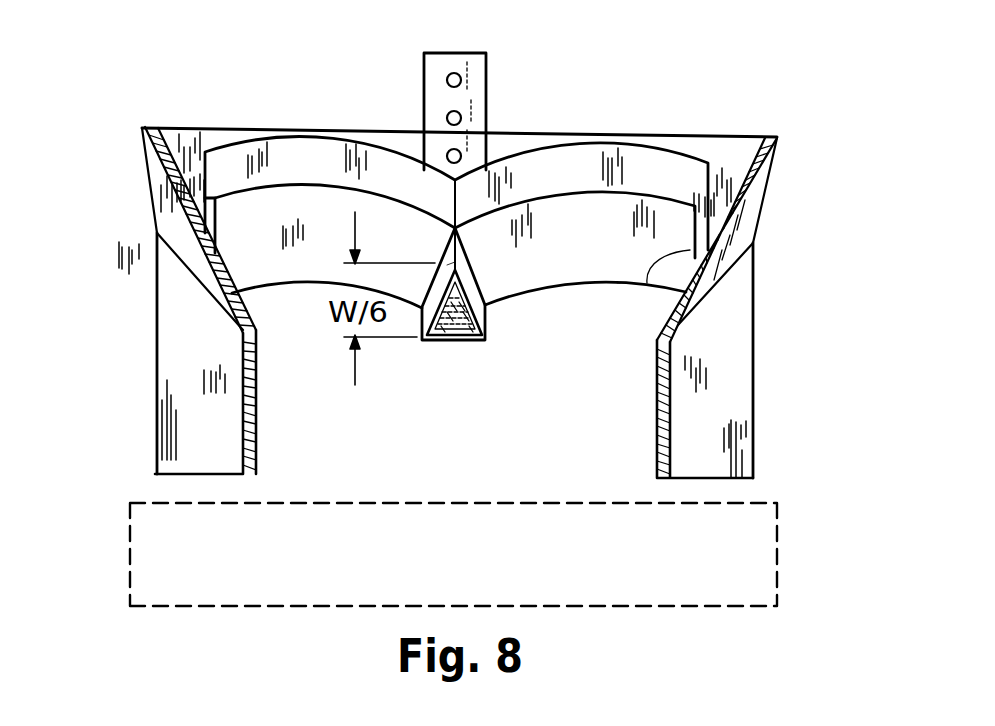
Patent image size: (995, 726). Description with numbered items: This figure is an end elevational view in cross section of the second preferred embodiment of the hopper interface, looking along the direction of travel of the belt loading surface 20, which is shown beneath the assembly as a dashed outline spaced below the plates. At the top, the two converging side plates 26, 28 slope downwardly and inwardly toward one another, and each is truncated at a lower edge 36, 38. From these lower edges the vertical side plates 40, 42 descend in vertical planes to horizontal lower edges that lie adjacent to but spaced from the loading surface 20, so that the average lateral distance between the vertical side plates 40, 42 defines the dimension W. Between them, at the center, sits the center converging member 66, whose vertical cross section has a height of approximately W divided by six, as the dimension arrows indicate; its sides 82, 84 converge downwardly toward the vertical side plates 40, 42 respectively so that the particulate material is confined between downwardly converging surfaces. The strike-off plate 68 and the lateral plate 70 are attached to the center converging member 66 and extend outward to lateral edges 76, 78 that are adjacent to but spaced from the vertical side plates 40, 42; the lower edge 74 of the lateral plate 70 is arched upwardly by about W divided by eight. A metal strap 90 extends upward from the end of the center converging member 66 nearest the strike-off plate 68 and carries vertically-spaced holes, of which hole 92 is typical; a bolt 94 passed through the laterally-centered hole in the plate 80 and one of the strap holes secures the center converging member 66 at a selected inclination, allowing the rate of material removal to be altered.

The loading surface 20 is at (458, 504).
The converging side plate 26 is at (757, 190).
The converging side plate 28 is at (157, 183).
The lower edge 36 is at (750, 263).
The lower edge 38 is at (168, 255).
The vertical side plate 40 is at (725, 392).
The vertical side plate 42 is at (188, 372).
The center converging member 66 is at (480, 277).
The strike-off plate 68 is at (553, 158).
The lateral plate 70 is at (647, 283).
The lower edge 74 is at (617, 283).
The lateral edge 76 is at (738, 163).
The lateral edge 78 is at (692, 294).
The plate 80 is at (546, 165).
The side 82 is at (450, 262).
The side 84 is at (481, 307).
The metal strap 90 is at (508, 142).
The hole 92 is at (446, 80).
The bolt 94 is at (446, 155).